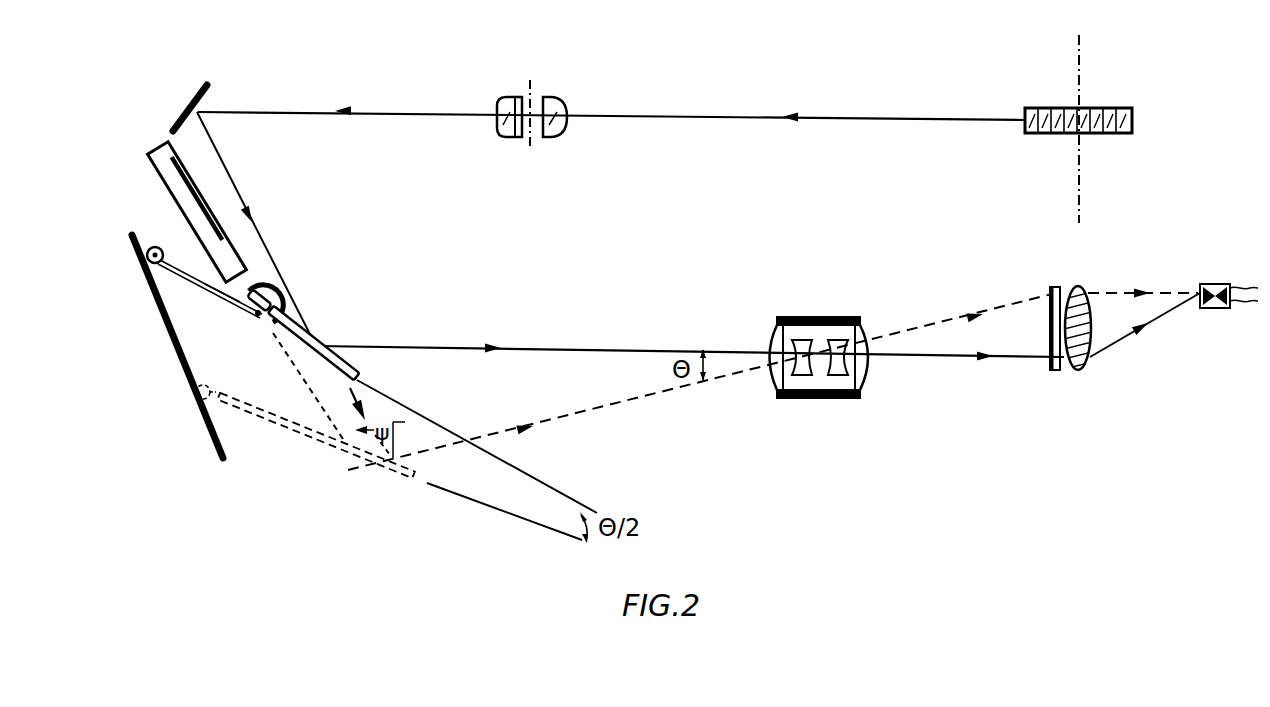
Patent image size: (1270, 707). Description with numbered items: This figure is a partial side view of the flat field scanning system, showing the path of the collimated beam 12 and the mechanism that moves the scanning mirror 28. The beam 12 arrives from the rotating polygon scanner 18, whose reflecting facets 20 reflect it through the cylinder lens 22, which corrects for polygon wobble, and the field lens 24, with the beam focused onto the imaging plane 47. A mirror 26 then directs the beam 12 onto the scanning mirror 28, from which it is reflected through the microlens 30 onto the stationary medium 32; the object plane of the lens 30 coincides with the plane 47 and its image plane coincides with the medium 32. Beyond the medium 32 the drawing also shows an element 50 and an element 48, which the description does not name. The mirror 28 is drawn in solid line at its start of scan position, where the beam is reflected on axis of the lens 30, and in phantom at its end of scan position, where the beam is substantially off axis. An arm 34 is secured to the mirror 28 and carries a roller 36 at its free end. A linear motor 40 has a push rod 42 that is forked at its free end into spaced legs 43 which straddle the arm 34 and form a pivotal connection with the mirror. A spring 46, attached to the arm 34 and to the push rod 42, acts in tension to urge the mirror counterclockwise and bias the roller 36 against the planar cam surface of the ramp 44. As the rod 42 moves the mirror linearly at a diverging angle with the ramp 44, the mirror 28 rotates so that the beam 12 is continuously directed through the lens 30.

The collimated beam 12 is at (688, 116).
The rotating polygon scanner 18 is at (1063, 108).
The reflecting facets 20 is at (1134, 121).
The cylinder lens 22 is at (568, 105).
The field lens 24 is at (494, 101).
The mirror 26 is at (192, 97).
The scanning mirror 28 is at (361, 376).
The microlens 30 is at (830, 398).
The stationary medium 32 is at (1056, 371).
The arm 34 is at (178, 265).
The roller 36 is at (160, 254).
The linear motor 40 is at (150, 156).
The push rod 42 is at (220, 304).
The spaced legs 43 is at (253, 316).
The ramp 44 is at (188, 346).
The spring 46 is at (282, 285).
The imaging plane 47 is at (533, 83).
The detector 48 is at (1216, 308).
The lens 50 is at (1078, 372).